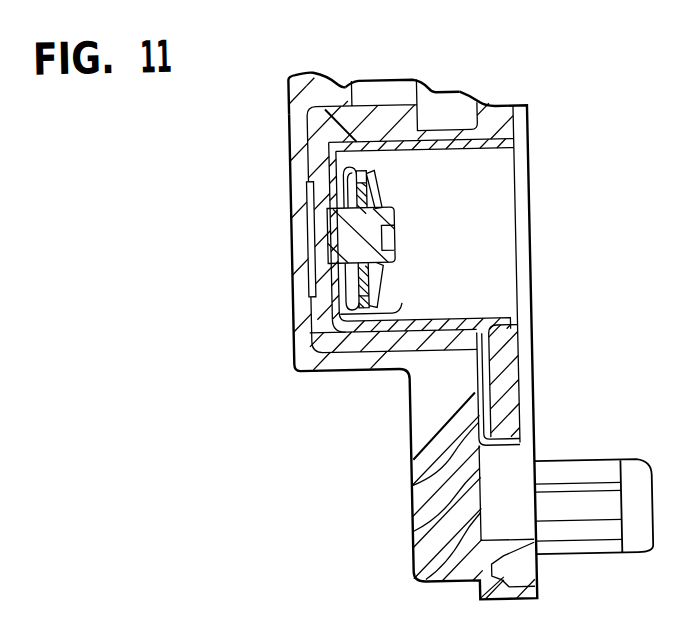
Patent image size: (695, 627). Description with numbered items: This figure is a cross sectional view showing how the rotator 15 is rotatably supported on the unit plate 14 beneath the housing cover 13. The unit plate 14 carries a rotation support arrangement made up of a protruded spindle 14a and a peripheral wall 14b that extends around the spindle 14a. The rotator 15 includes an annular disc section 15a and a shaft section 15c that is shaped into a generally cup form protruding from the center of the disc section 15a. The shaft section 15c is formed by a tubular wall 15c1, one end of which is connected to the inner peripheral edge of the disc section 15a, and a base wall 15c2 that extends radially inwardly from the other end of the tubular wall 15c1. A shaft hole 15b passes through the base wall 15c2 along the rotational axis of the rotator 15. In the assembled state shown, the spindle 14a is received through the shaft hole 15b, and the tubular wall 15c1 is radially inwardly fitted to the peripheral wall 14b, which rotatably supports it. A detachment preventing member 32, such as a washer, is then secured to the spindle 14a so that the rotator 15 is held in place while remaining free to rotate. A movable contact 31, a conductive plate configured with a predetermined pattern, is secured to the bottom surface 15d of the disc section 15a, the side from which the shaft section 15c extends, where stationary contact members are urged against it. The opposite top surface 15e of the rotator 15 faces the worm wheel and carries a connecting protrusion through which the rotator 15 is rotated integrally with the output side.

The housing cover 13 is at (351, 76).
The unit plate 14 is at (430, 78).
The spindle 14a is at (397, 250).
The peripheral wall 14b is at (378, 368).
The rotator 15 is at (522, 126).
The disc section 15a is at (513, 354).
The shaft hole 15b is at (337, 266).
The shaft section 15c is at (415, 404).
The tubular wall 15c1 is at (451, 151).
The base wall 15c2 is at (354, 316).
The bottom surface 15d is at (411, 521).
The top surface 15e is at (523, 333).
The movable contact 31 is at (413, 477).
The detachment preventing member 32 is at (381, 172).